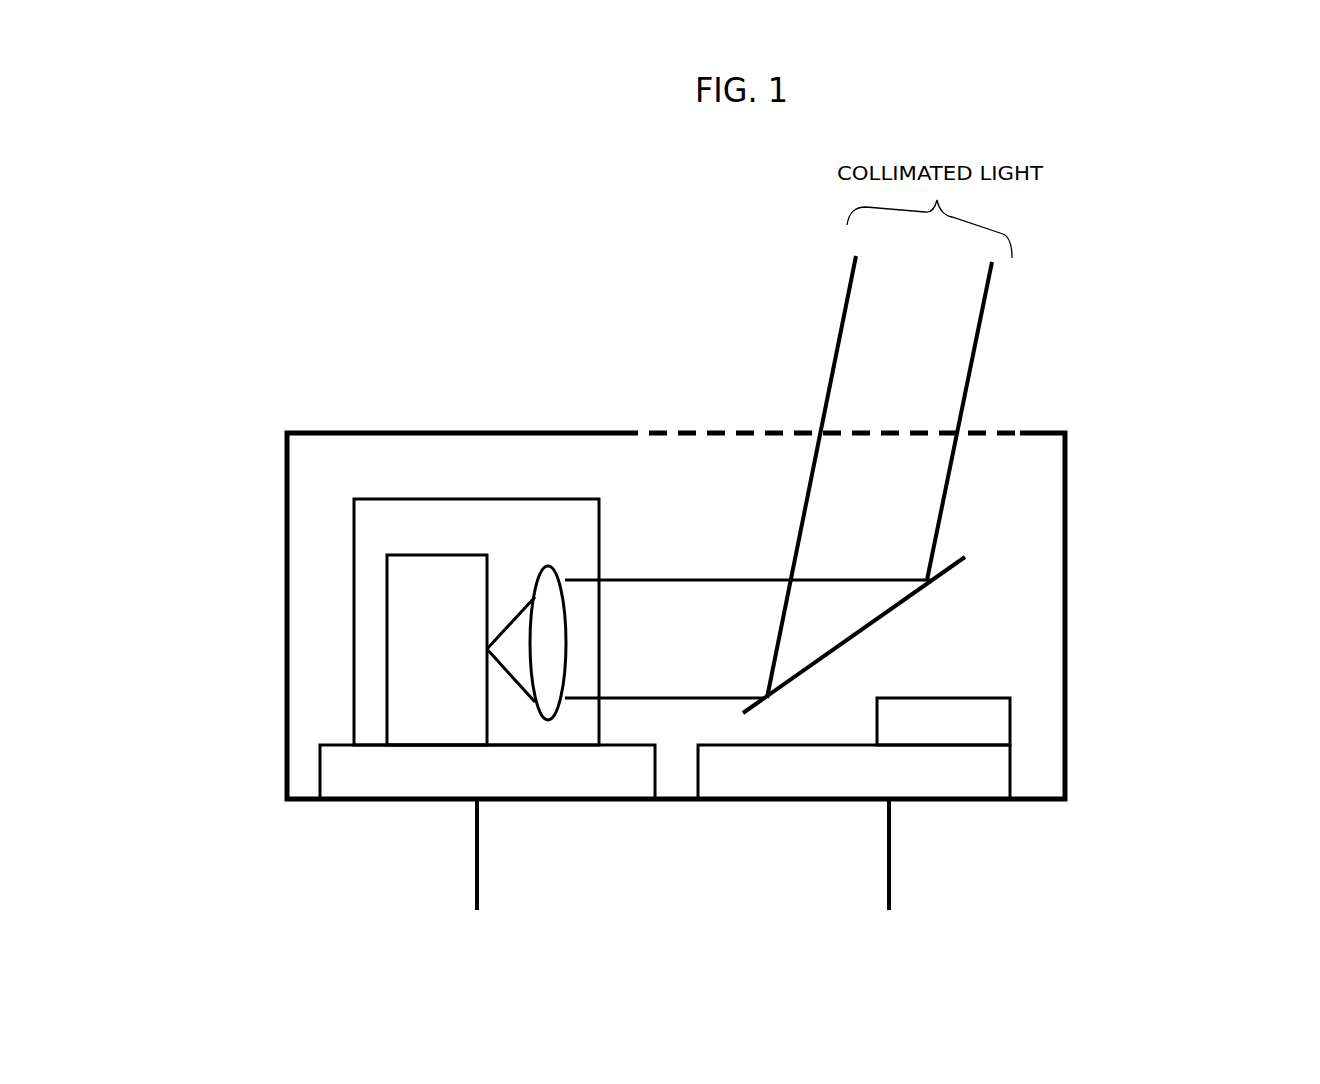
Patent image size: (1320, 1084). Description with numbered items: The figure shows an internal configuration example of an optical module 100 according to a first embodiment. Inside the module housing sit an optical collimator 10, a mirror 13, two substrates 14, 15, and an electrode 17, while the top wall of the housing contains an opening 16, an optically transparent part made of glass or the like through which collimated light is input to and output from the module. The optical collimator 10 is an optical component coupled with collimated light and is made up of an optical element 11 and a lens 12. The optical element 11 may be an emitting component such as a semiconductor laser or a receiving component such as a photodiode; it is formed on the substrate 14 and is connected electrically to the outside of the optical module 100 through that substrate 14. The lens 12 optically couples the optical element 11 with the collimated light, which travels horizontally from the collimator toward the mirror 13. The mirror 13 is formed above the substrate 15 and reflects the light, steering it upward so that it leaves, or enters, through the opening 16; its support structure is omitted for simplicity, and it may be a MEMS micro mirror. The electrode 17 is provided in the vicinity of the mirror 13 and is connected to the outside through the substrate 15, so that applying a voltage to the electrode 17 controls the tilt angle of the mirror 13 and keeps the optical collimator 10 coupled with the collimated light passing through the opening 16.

The optical module 100 is at (320, 433).
The optical collimator 10 is at (417, 499).
The optical element 11 is at (437, 555).
The lens 12 is at (548, 566).
The mirror 13 is at (965, 565).
The substrate 14 is at (365, 783).
The substrate 15 is at (977, 783).
The opening 16 is at (998, 433).
The electrode 17 is at (1010, 715).